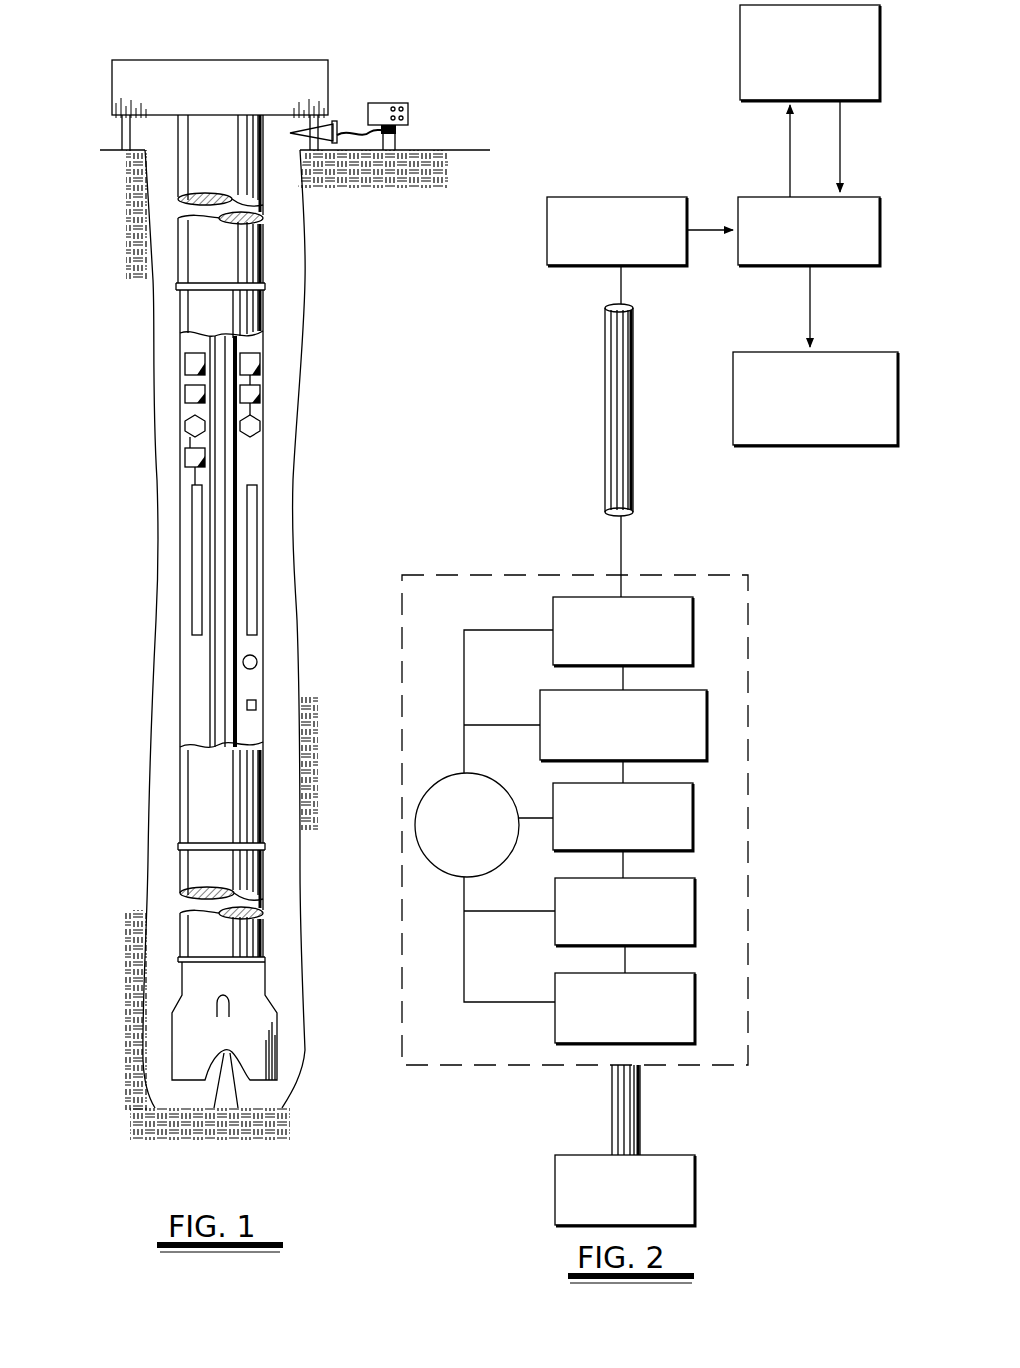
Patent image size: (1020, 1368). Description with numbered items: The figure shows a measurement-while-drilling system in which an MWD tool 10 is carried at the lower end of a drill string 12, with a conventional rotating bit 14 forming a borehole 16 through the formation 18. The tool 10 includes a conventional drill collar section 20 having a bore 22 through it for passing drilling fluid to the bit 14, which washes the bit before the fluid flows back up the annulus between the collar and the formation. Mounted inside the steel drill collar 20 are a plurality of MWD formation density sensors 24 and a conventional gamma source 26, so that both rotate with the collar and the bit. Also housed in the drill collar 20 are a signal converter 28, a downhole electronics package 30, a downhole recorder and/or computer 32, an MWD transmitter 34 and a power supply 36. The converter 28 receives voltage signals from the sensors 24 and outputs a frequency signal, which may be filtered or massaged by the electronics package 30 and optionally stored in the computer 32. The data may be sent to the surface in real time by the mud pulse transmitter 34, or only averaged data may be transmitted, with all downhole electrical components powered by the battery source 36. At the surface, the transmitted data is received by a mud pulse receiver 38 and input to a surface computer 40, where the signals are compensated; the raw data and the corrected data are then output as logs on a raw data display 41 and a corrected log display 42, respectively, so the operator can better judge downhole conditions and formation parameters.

In FIG. 1, the MWD tool 10 is at (160, 635).
In FIG. 1, the drill string 12 is at (242, 257).
In FIG. 2, the drill string 12 is at (612, 404).
In FIG. 1, the rotating bit 14 is at (245, 1045).
In FIG. 2, the rotating bit 14 is at (695, 1197).
In FIG. 1, the borehole 16 is at (280, 560).
In FIG. 1, the formation 18 is at (110, 938).
In FIG. 1, the drill collar section 20 is at (200, 305).
In FIG. 2, the drill collar section 20 is at (527, 572).
In FIG. 1, the bore 22 is at (215, 695).
In FIG. 1, the formation density sensors 24 is at (190, 509).
In FIG. 2, the formation density sensors 24 is at (695, 1015).
In FIG. 1, the gamma source 26 is at (262, 702).
In FIG. 2, the gamma source 26 is at (695, 920).
In FIG. 1, the signal converter 28 is at (200, 460).
In FIG. 1, the downhole electronics package 30 is at (255, 426).
In FIG. 2, the downhole electronics package 30 is at (693, 819).
In FIG. 1, the downhole recorder and/or computer 32 is at (186, 397).
In FIG. 2, the downhole recorder and/or computer 32 is at (707, 730).
In FIG. 1, the MWD transmitter 34 is at (186, 366).
In FIG. 2, the MWD transmitter 34 is at (693, 630).
In FIG. 1, the power supply 36 is at (258, 662).
In FIG. 2, the power supply 36 is at (435, 871).
In FIG. 1, the mud pulse receiver 38 is at (330, 128).
In FIG. 2, the mud pulse receiver 38 is at (633, 197).
In FIG. 1, the surface computer 40 is at (398, 130).
In FIG. 2, the surface computer 40 is at (759, 197).
In FIG. 2, the raw data display 41 is at (740, 46).
In FIG. 1, the corrected log display 42 is at (383, 103).
In FIG. 2, the corrected log display 42 is at (864, 446).